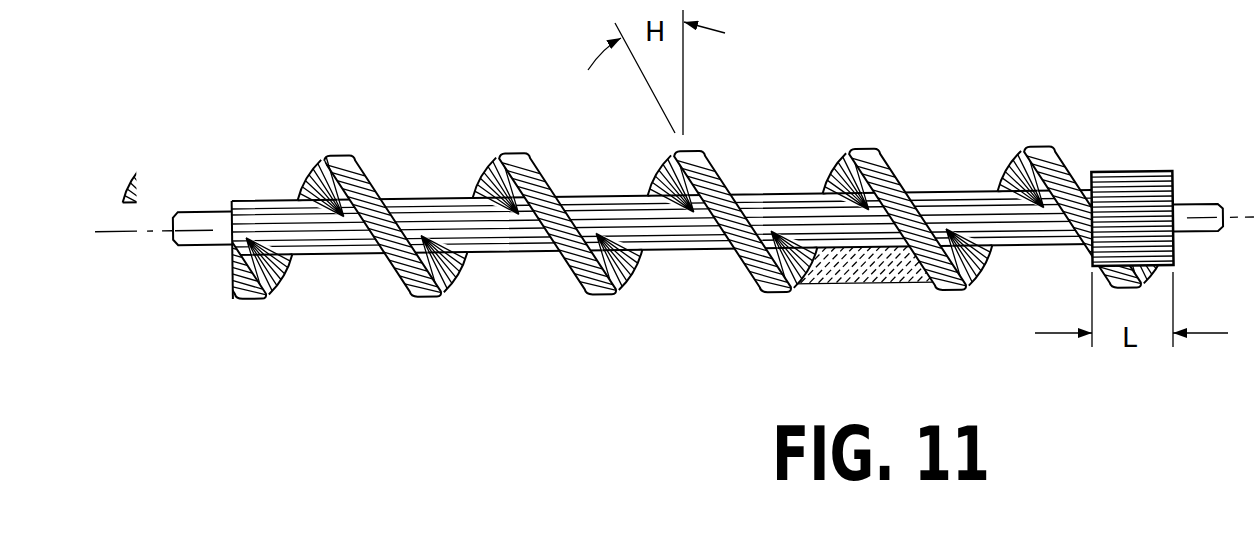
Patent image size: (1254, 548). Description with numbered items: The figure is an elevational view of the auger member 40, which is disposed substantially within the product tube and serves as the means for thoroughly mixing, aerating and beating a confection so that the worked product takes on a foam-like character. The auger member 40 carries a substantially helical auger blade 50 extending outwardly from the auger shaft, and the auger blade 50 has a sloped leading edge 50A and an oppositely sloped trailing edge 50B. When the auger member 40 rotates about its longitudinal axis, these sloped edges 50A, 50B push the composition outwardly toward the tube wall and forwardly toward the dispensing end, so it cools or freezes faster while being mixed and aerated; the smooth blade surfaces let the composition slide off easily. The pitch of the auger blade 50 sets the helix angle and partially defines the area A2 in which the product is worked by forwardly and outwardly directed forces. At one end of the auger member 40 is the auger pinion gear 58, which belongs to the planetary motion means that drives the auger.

The auger member 40 is at (673, 232).
The auger blade 50 is at (644, 223).
The sloped leading edge 50A is at (310, 179).
The trailing edge 50B is at (443, 110).
The auger pinion gear 58 is at (1142, 173).
The area A2 is at (852, 258).